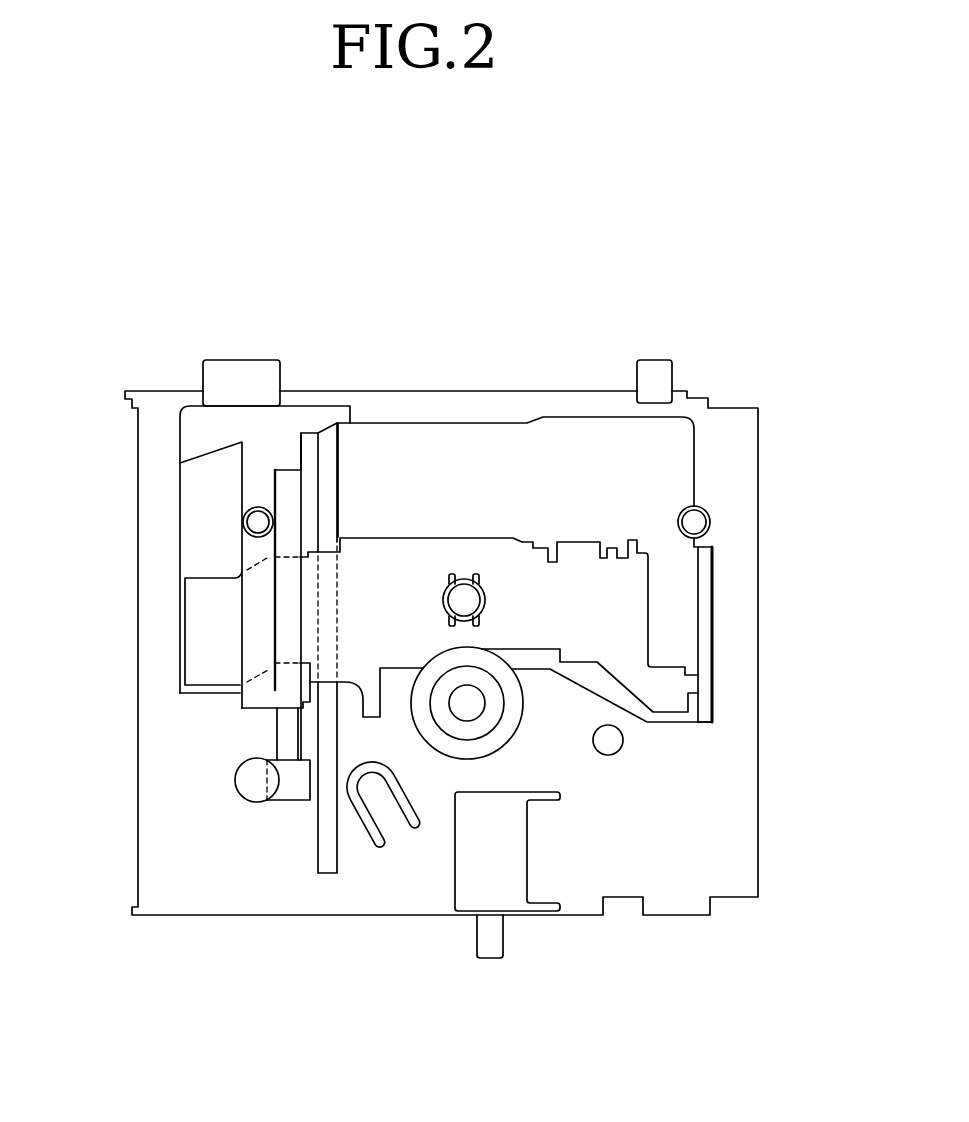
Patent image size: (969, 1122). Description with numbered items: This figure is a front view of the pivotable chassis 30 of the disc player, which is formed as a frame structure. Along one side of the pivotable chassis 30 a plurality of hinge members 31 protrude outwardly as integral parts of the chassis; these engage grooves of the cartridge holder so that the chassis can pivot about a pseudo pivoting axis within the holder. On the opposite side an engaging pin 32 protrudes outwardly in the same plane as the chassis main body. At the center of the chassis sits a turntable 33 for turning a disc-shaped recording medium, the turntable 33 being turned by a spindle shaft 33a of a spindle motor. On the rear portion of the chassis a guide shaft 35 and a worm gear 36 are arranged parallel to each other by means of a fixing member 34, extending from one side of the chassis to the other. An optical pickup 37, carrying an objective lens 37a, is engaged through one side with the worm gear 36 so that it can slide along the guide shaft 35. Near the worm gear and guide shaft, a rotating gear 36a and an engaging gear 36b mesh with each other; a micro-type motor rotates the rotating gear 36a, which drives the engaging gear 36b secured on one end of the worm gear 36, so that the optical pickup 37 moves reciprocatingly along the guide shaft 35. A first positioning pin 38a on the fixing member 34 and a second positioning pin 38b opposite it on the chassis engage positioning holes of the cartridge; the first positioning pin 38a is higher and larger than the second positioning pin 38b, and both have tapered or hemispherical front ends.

The pivotable chassis 30 is at (768, 600).
The hinge members 31 is at (245, 368).
The engaging pin 32 is at (497, 940).
The turntable 33 is at (523, 707).
The spindle shaft 33a is at (482, 710).
The fixing member 34 is at (310, 418).
The guide shaft 35 is at (328, 475).
The worm gear 36 is at (282, 735).
The rotating gear 36a is at (288, 797).
The engaging gear 36b is at (243, 778).
The optical pickup 37 is at (573, 565).
The objective lens 37a is at (465, 592).
The first positioning pin 38a is at (243, 530).
The second positioning pin 38b is at (700, 523).